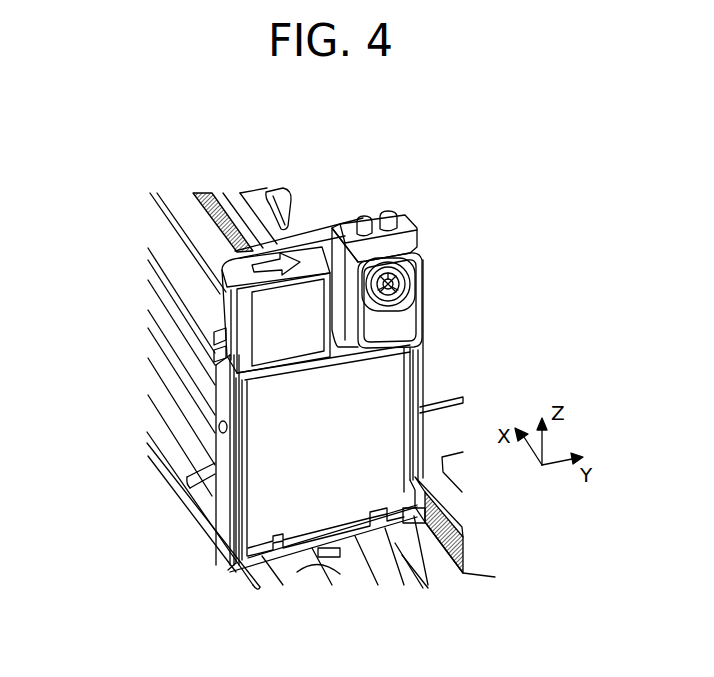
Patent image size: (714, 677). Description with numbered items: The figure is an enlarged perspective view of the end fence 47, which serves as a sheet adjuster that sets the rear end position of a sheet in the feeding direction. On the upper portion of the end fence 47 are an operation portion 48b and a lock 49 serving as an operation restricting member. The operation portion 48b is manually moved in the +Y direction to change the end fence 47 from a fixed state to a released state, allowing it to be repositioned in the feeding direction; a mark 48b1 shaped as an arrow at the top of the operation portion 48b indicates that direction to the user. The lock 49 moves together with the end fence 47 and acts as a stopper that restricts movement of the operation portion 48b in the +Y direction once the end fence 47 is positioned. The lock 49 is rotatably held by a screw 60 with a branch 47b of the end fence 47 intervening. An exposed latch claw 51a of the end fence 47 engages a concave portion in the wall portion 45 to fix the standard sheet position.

The wall portion 45 is at (310, 563).
The end fence 47 is at (430, 363).
The branch 47b is at (410, 325).
The operation portion 48b is at (270, 323).
The mark 48b1 is at (310, 235).
The lock 49 is at (407, 212).
The latch claw 51a is at (222, 543).
The screw 60 is at (410, 283).